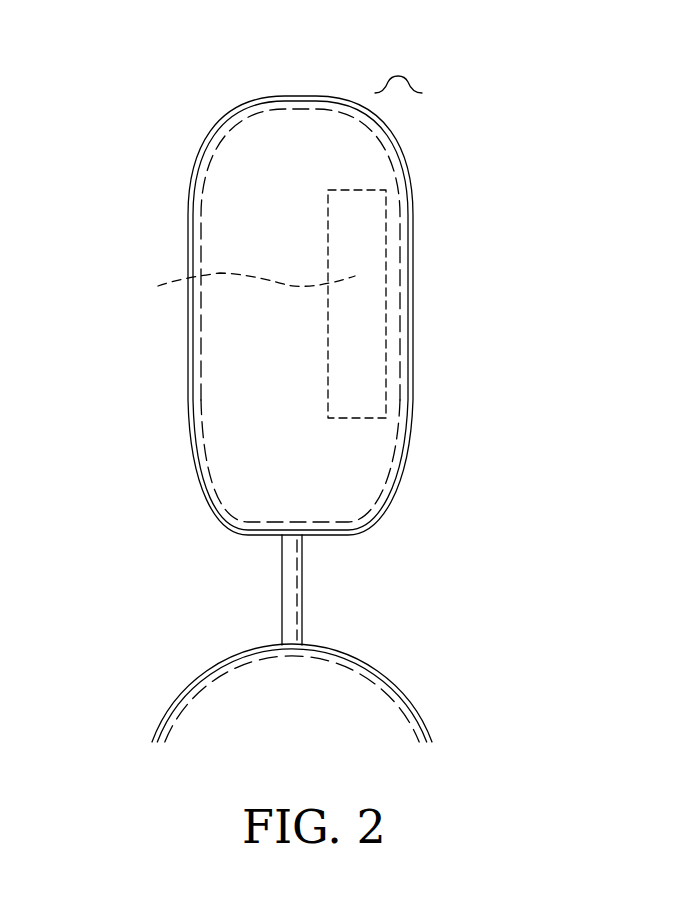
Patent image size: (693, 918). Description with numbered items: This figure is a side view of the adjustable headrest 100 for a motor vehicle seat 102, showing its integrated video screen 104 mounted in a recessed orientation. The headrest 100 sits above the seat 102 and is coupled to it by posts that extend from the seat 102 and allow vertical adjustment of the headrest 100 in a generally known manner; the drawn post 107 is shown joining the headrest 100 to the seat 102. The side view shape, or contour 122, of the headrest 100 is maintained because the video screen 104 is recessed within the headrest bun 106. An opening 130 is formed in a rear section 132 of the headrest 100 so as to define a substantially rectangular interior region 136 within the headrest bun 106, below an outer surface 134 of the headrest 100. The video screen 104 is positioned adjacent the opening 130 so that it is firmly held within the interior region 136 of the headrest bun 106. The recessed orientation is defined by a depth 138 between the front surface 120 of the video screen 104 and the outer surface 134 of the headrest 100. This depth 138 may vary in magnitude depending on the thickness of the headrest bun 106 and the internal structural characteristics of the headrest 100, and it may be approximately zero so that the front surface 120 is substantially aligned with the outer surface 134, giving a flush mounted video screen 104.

The adjustable headrest 100 is at (165, 90).
The first motor vehicle seat 102 is at (380, 697).
The video screen 104 is at (357, 346).
The headrest bun 106 is at (318, 130).
The stem 107 is at (302, 580).
The front surface 120 is at (386, 216).
The contour 122 is at (495, 207).
The opening 130 is at (448, 299).
The rear section 132 is at (352, 485).
The outer surface 134 is at (400, 495).
The interior region 136 is at (236, 285).
The depth 138 is at (398, 71).